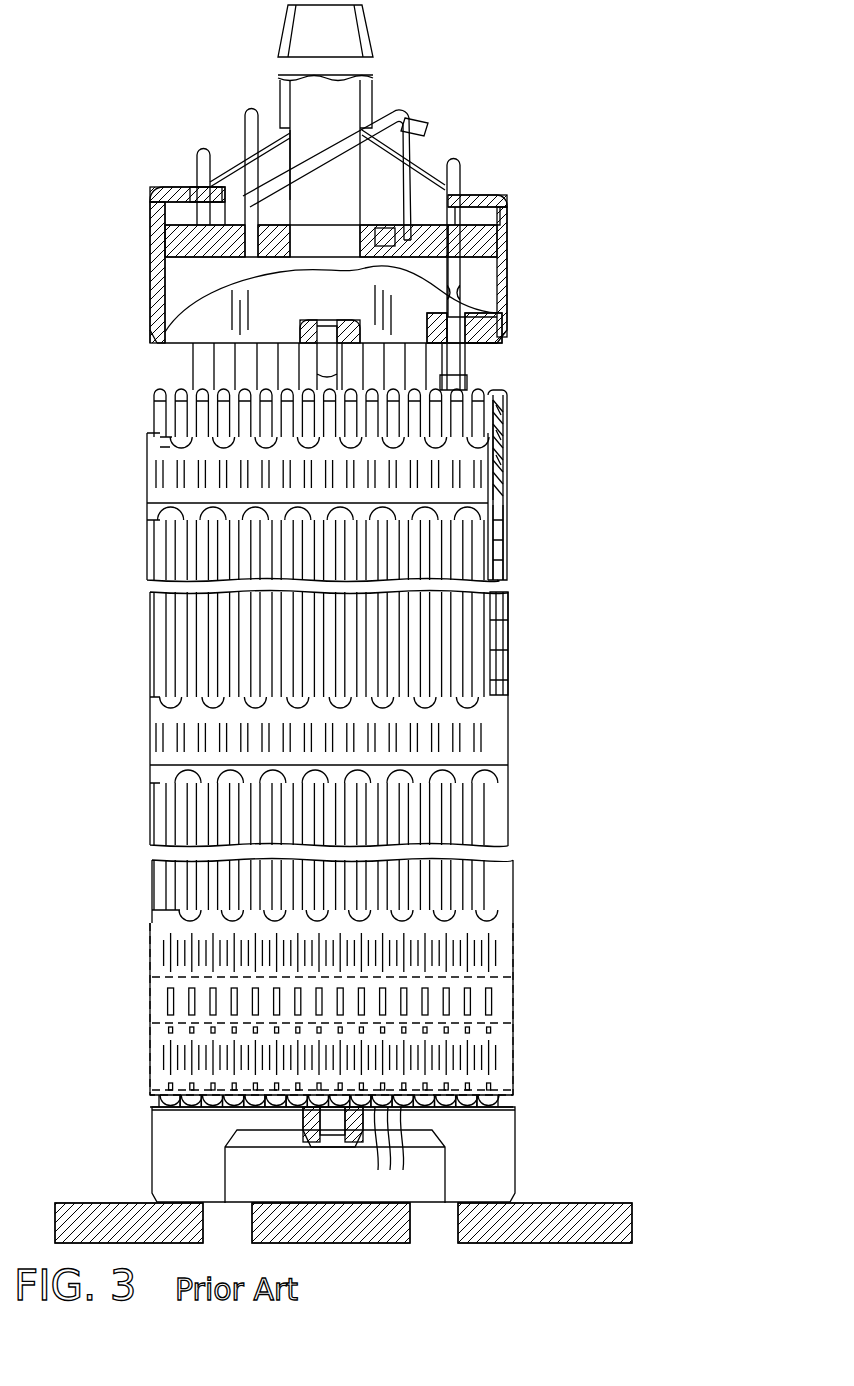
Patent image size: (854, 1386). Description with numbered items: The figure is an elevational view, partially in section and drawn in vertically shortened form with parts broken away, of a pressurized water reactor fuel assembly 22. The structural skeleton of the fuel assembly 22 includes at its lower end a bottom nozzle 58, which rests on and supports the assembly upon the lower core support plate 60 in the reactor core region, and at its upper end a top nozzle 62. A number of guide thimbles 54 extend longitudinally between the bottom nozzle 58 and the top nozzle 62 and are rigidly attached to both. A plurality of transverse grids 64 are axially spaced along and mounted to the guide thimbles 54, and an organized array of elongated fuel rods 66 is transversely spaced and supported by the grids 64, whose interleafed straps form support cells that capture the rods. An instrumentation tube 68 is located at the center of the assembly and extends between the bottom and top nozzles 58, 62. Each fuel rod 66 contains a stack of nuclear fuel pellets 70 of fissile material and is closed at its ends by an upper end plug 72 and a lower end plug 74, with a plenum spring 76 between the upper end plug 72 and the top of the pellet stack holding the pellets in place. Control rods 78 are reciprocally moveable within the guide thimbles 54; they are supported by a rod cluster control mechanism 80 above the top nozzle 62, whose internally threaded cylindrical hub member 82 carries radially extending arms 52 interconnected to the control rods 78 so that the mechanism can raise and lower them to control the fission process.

The fuel assembly 22 is at (378, 624).
The arm 52 is at (275, 185).
The guide thimble 54 is at (190, 370).
The bottom nozzle 58 is at (522, 1147).
The lower core support plate 60 is at (555, 1203).
The top nozzle 62 is at (515, 240).
The transverse grid 64 is at (150, 483).
The fuel rod 66 is at (150, 643).
The instrumentation tube 68 is at (338, 1130).
The nuclear fuel pellet 70 is at (500, 555).
The upper end plug 72 is at (507, 398).
The lower end plug 74 is at (383, 1107).
The plenum spring 76 is at (505, 460).
The control rod 78 is at (510, 318).
The rod cluster control mechanism 80 is at (425, 106).
The hub member 82 is at (378, 100).